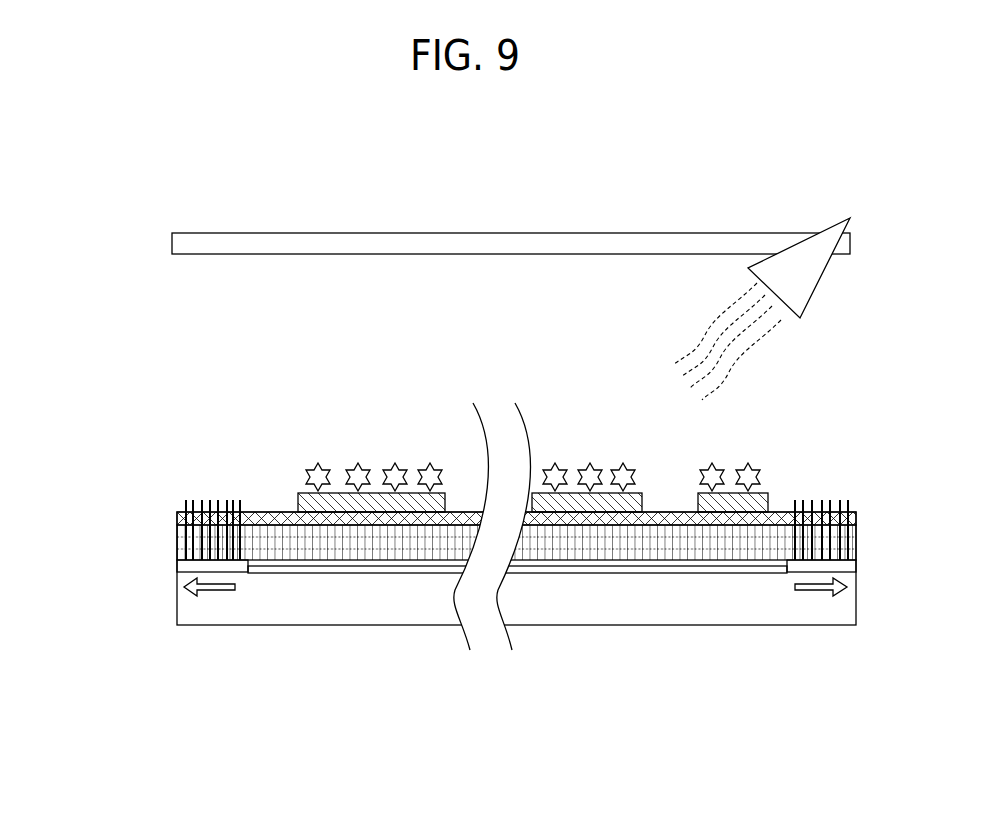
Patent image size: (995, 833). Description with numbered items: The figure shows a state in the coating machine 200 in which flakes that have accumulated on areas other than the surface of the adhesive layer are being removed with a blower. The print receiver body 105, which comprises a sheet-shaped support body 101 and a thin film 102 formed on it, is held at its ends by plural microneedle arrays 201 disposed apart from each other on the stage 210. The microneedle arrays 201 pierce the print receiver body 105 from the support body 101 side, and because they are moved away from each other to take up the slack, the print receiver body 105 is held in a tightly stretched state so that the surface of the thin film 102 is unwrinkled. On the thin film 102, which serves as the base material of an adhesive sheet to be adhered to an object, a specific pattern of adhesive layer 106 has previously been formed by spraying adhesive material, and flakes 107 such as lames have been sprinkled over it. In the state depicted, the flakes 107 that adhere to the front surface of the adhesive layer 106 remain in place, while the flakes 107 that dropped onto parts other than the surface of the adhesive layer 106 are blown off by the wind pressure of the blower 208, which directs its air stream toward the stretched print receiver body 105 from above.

The coating machine 200 is at (238, 684).
The microneedle array 201 is at (212, 510).
The blower 208 is at (793, 257).
The stage 210 is at (675, 625).
The print receiver body 105 is at (441, 530).
The support body 101 is at (475, 551).
The thin film 102 is at (177, 520).
The adhesive layer 106 is at (335, 492).
The flakes 107 is at (590, 492).